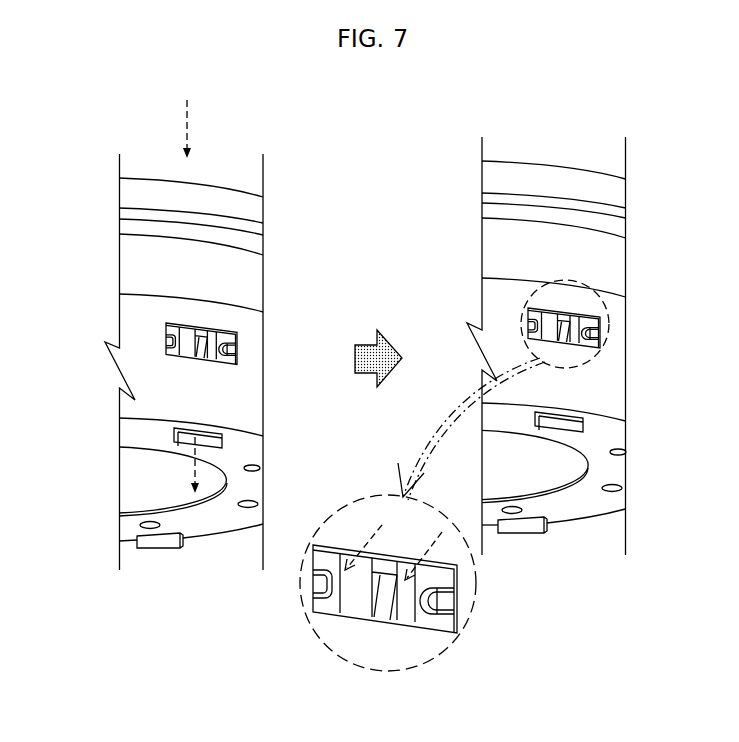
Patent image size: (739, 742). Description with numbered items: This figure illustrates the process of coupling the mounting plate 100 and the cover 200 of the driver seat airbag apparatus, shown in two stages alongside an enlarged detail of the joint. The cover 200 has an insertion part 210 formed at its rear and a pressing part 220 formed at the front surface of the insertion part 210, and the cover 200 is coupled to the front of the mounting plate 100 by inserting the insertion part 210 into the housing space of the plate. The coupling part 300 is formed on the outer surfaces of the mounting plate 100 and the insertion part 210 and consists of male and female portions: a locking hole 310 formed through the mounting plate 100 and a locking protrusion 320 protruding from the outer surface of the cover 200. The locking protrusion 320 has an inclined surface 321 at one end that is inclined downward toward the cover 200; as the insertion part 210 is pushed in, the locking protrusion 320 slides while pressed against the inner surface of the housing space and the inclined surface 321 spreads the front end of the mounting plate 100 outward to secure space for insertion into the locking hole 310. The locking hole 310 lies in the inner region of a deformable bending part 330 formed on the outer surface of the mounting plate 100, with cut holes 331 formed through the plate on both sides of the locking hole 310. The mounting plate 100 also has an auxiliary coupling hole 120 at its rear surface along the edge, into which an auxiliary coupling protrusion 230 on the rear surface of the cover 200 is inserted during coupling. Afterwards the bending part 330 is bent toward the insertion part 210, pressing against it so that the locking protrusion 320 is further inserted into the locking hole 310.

The mounting plate 100 is at (146, 408).
The auxiliary coupling hole 120 is at (227, 442).
The cover 200 is at (146, 185).
The insertion part 210 is at (252, 297).
The pressing part 220 is at (228, 212).
The auxiliary coupling protrusion 230 is at (163, 547).
The coupling part 300 is at (188, 319).
The locking hole 310 is at (207, 363).
The locking protrusion 320 is at (203, 322).
The inclined surface 321 is at (248, 341).
The bending part 330 is at (180, 338).
The cut hole 331 is at (237, 348).